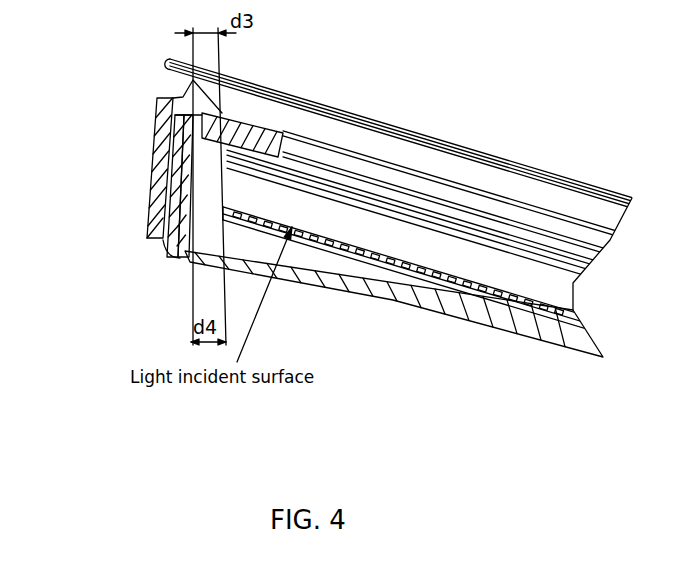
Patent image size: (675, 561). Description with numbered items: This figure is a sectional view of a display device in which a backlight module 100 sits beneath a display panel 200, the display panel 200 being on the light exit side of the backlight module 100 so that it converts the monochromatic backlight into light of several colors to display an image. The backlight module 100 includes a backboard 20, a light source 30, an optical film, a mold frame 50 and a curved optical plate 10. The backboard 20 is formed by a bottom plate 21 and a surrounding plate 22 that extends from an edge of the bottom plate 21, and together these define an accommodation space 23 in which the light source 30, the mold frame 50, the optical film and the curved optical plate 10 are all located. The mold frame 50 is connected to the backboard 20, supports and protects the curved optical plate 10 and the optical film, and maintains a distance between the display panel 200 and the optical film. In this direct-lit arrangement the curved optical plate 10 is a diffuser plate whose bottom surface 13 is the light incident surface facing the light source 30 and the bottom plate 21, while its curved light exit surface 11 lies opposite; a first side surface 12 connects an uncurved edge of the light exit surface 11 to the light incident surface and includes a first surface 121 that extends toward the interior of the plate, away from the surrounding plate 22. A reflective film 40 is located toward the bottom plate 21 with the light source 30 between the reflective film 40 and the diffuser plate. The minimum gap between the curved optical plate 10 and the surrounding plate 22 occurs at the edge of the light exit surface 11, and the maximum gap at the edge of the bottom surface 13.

The backlight module 100 is at (52, 287).
The curved optical plate 10 is at (375, 243).
The light exit surface 11 is at (437, 233).
The first side surface 12 is at (240, 172).
The first surface 121 is at (242, 135).
The bottom surface 13 is at (490, 290).
The backboard 20 is at (107, 188).
The bottom plate 21 is at (178, 257).
The surrounding plate 22 is at (190, 205).
The accommodation space 23 is at (200, 167).
The light source 30 is at (327, 243).
The reflective film 40 is at (550, 312).
The mold frame 50 is at (157, 100).
The display panel 200 is at (168, 64).